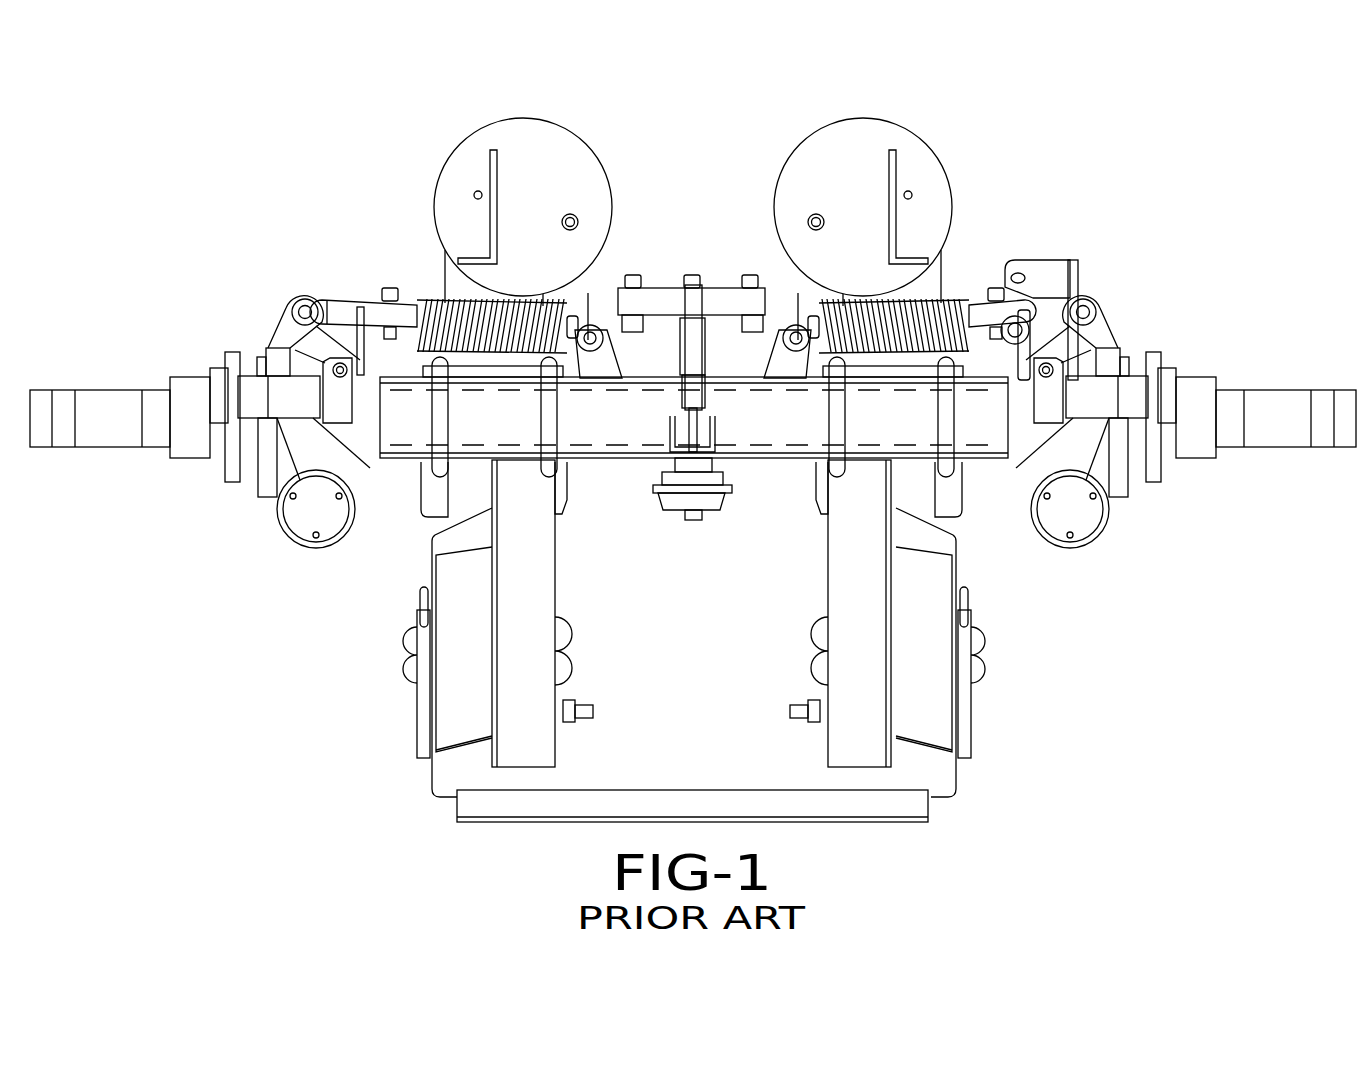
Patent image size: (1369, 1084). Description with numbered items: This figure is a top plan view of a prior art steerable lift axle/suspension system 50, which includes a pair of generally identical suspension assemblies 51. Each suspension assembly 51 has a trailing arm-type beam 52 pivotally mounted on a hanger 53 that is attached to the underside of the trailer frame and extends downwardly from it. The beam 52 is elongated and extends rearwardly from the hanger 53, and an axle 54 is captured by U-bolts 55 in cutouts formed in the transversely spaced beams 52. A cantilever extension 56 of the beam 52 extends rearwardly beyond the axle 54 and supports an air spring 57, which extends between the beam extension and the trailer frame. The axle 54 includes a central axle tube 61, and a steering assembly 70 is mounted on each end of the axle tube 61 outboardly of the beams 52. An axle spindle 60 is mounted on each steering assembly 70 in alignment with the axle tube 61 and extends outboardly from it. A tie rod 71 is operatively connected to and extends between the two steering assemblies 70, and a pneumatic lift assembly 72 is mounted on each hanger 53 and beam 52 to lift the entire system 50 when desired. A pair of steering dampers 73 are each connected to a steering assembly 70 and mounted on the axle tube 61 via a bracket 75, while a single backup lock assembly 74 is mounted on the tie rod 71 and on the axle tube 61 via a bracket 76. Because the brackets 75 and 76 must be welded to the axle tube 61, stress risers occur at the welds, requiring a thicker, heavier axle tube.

The steerable lift axle/suspension system 50 is at (190, 768).
The suspension assembly 51 is at (424, 574).
The beam 52 is at (446, 498).
The hanger 53 is at (436, 797).
The axle 54 is at (760, 458).
The U-bolts 55 is at (547, 403).
The cantilever extension 56 is at (457, 295).
The air spring 57 is at (453, 197).
The axle spindle 60 is at (118, 425).
The axle tube 61 is at (620, 430).
The steering assembly 70 is at (270, 321).
The tie rod 71 is at (798, 303).
The pneumatic lift assembly 72 is at (568, 641).
The steering damper 73 is at (323, 296).
The backup lock assembly 74 is at (719, 287).
The bracket 75 is at (600, 350).
The bracket 76 is at (665, 426).